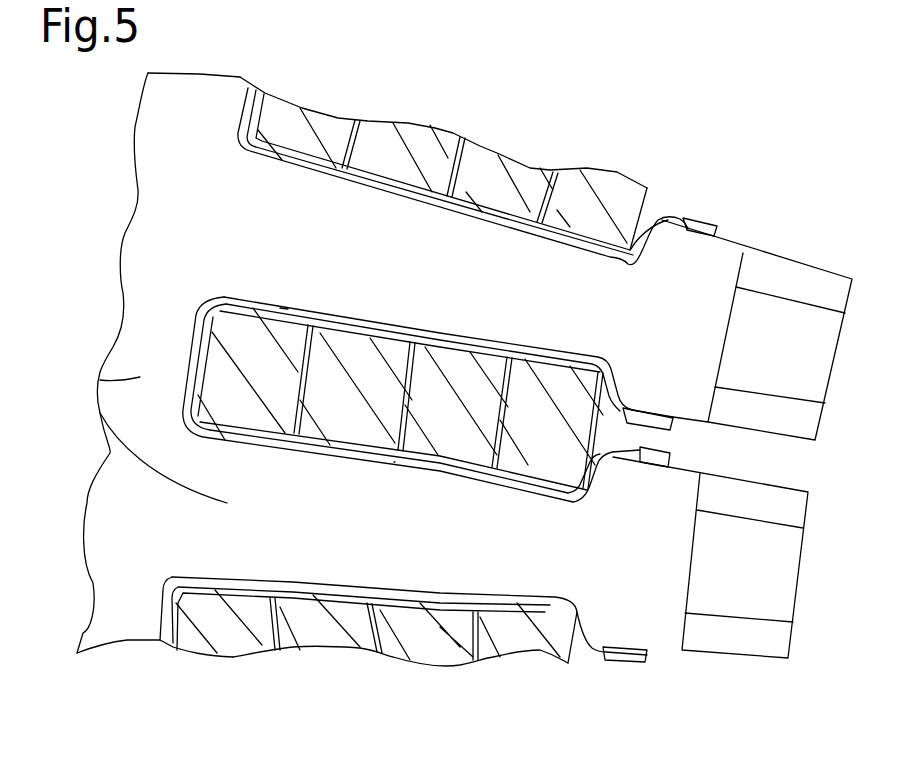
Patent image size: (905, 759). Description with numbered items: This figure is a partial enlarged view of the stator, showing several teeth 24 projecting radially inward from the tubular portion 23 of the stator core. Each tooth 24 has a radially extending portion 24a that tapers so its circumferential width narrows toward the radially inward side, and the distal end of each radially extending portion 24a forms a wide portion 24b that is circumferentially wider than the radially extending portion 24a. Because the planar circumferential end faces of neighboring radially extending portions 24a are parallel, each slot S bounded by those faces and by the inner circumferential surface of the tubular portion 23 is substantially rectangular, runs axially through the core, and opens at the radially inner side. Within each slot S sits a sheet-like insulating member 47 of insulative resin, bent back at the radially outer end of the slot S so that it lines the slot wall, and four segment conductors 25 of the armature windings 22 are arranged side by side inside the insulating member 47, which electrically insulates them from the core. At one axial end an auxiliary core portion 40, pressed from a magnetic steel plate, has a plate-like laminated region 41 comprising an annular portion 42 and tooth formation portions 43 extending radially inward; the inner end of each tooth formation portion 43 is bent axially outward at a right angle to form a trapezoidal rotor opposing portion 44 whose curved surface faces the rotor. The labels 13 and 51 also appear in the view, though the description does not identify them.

The connection structure 13 is at (746, 392).
The tubular portion 23 is at (183, 187).
The tooth 24 is at (477, 170).
The radially extending portion 24a is at (355, 208).
The wide portion 24b is at (686, 262).
The segment conductor 25 is at (428, 403).
The armature winding 22 is at (428, 403).
The auxiliary core portion 40 is at (746, 432).
The laminated region 41 is at (114, 425).
The annular portion 42 is at (100, 372).
The tooth formation portion 43 is at (142, 447).
The rotor opposing portion 44 is at (818, 378).
The insulating member 47 is at (394, 462).
The partition 51 is at (424, 365).
The slot S is at (283, 308).